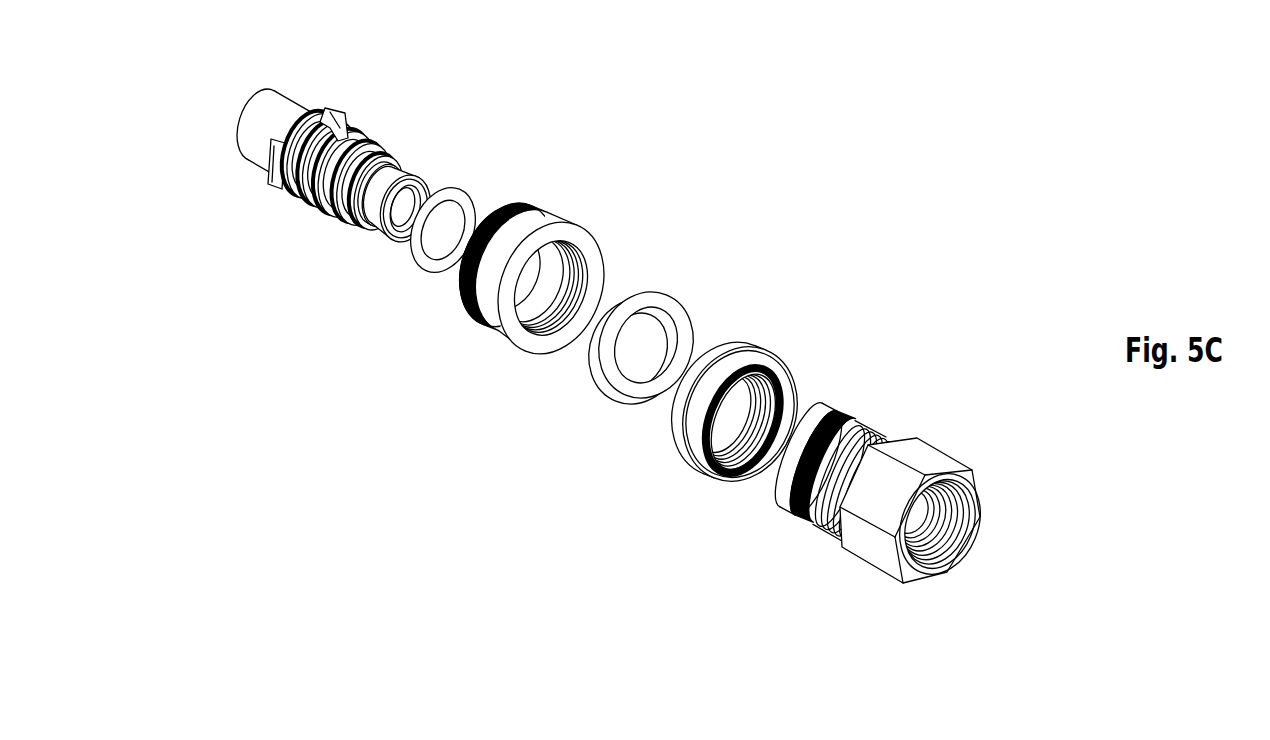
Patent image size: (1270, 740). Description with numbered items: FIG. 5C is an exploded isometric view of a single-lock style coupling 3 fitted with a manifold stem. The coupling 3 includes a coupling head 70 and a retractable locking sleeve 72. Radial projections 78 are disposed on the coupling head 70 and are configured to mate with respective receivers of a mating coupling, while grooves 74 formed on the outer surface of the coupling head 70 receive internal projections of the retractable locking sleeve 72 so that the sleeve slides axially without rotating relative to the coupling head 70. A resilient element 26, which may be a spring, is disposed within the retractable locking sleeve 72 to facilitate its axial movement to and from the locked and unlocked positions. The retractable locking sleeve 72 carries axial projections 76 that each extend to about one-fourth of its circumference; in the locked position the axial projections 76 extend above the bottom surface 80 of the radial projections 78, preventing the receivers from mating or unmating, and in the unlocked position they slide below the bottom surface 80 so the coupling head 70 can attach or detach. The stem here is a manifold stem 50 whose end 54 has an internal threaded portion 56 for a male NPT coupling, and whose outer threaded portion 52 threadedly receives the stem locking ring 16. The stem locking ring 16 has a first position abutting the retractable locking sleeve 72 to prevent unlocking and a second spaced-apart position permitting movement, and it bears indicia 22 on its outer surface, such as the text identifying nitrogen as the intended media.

The single-lock style coupling 3 is at (454, 261).
The stem locking ring 16 is at (733, 389).
The indicia 22 is at (690, 425).
The resilient element 26 is at (673, 303).
The manifold stem 50 is at (897, 434).
The threaded portion 52 is at (875, 427).
The end 54 is at (867, 498).
The internal threaded portion 56 is at (938, 525).
The coupling head 70 is at (315, 200).
The retractable locking sleeve 72 is at (557, 225).
The grooves 74 is at (340, 128).
The axial projections 76 is at (525, 204).
The radial projections 78 is at (267, 163).
The bottom surface 80 is at (275, 182).